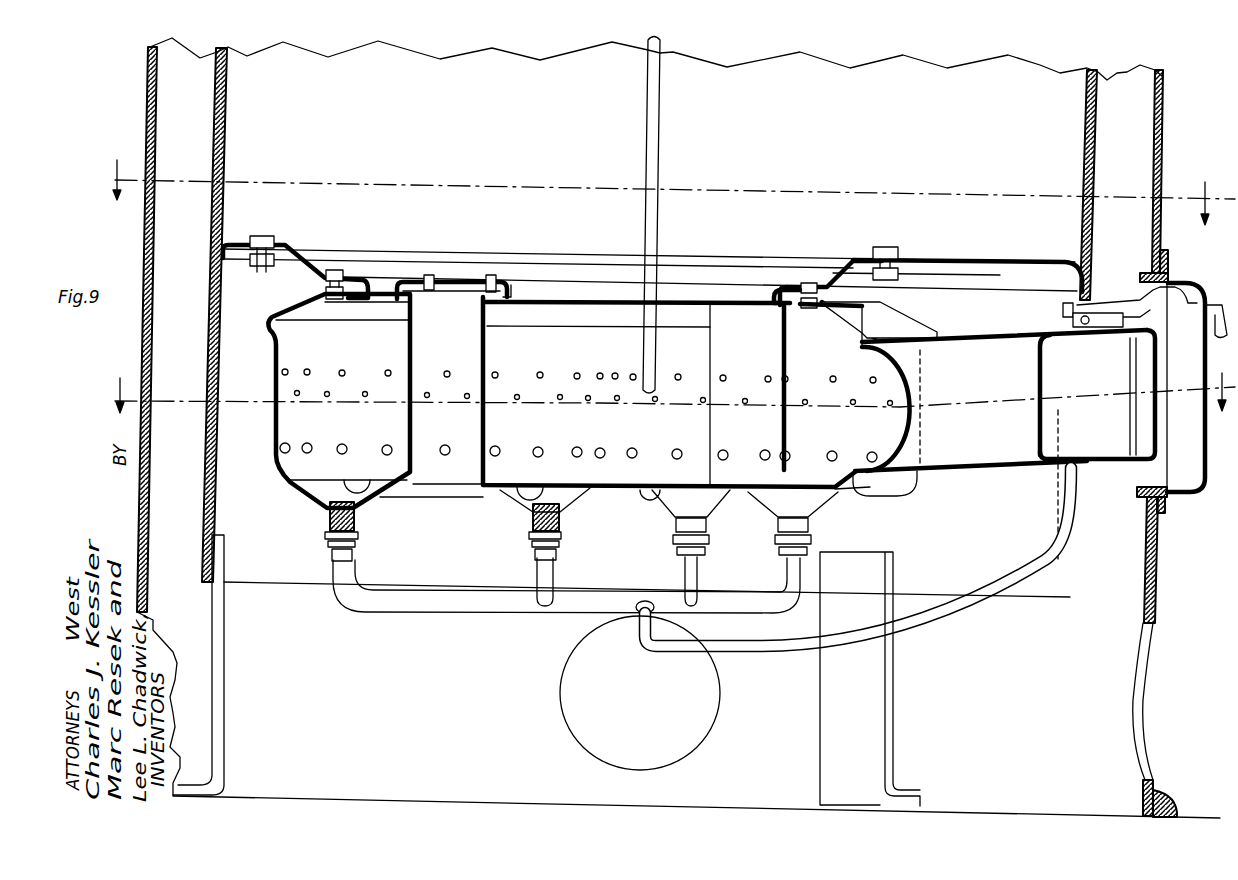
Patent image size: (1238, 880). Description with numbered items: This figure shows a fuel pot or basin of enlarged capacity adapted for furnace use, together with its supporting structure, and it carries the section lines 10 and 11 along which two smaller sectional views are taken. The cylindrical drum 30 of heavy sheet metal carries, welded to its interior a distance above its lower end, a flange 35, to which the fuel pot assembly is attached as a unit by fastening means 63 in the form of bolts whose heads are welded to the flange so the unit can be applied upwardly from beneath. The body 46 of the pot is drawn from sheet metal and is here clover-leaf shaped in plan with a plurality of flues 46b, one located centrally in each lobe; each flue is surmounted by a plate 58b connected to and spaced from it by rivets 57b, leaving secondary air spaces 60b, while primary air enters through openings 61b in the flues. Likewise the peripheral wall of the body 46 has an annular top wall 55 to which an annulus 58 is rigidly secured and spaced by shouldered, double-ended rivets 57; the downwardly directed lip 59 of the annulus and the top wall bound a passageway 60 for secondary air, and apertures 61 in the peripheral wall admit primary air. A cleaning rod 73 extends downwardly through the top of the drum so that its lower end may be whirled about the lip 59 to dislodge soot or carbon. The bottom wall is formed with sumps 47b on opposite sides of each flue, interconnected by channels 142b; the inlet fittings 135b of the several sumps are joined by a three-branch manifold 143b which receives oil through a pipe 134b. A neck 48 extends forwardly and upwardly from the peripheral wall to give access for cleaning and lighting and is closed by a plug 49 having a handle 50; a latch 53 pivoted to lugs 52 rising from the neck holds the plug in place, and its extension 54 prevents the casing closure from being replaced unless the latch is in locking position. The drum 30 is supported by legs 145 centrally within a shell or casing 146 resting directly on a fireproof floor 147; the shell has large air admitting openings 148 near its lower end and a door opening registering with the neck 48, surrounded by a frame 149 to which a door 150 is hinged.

The section line 10— 10 is at (112, 178).
The section line 11— 11 is at (673, 382).
The cylindrical drum 30 is at (216, 141).
The flange 35 is at (1000, 258).
The body 46 is at (273, 422).
The flues 46b is at (487, 347).
The sumps 47b is at (313, 488).
The neck 48 is at (955, 472).
The plug 49 is at (1038, 372).
The handle 50 is at (1128, 413).
The lugs 52 is at (1098, 328).
The latch 53 is at (1120, 300).
The extension 54 is at (1192, 286).
The annular top wall 55 is at (885, 324).
The shouldered double ended rivets 57 is at (333, 270).
The rivets 57b is at (512, 288).
The annulus 58 is at (832, 294).
The plate 58b is at (456, 283).
The lip 59 is at (772, 292).
The passageway 60 is at (346, 278).
The secondary air spaces 60b is at (403, 283).
The apertures 61 is at (312, 445).
The primary air admitting openings 61b is at (412, 448).
The fastening means 63 is at (270, 272).
The cleaning rod 73 is at (659, 162).
The pipe 134b is at (770, 652).
The inlet fittings 135b is at (528, 521).
The channels 142b is at (653, 500).
The three-branch manifold 143b is at (594, 608).
The legs 145 is at (208, 661).
The shell or casing 146 is at (146, 511).
The floor 147 is at (418, 794).
The air admitting openings 148 is at (562, 684).
The frame 149 is at (1142, 498).
The door 150 is at (1188, 498).